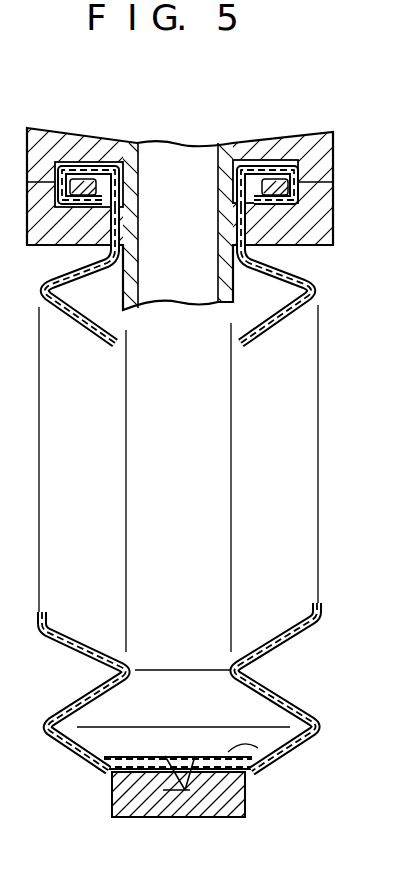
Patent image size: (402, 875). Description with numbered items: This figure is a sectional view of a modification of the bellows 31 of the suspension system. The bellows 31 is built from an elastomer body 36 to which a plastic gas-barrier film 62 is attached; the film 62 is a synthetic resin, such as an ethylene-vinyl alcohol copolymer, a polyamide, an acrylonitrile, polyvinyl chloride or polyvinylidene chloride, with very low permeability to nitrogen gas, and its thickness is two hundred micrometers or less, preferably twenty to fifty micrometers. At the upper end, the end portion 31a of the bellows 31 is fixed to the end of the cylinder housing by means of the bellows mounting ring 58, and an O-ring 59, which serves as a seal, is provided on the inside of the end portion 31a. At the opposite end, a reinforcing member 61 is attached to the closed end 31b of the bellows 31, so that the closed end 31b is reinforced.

The bellows 31 is at (216, 456).
The end portion of bellows 31a is at (296, 170).
The closed end of bellows 31b is at (280, 755).
The elastomer body 36 is at (255, 700).
The bellows mounting ring 58 is at (328, 218).
The O-ring 59 is at (313, 176).
The reinforcing member 61 is at (242, 803).
The plastic gas-barrier film 62 is at (270, 690).